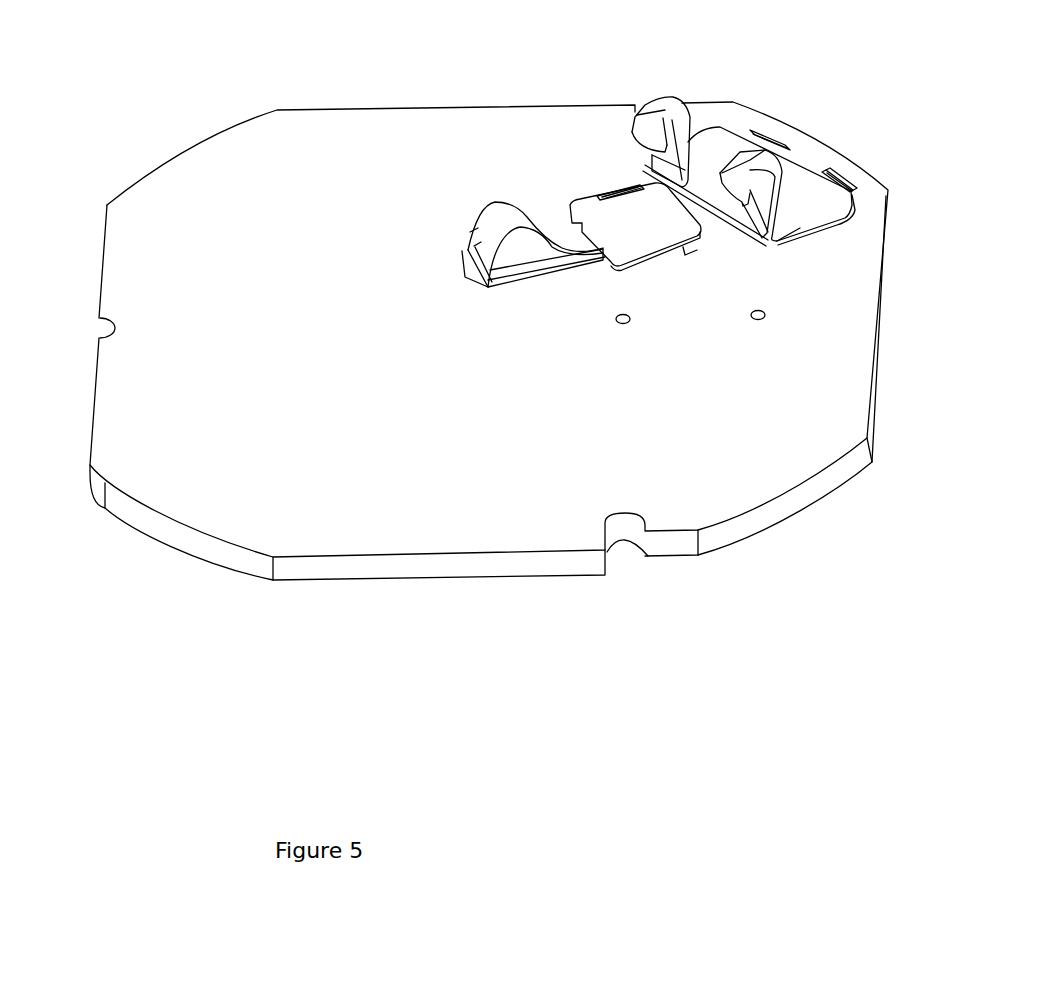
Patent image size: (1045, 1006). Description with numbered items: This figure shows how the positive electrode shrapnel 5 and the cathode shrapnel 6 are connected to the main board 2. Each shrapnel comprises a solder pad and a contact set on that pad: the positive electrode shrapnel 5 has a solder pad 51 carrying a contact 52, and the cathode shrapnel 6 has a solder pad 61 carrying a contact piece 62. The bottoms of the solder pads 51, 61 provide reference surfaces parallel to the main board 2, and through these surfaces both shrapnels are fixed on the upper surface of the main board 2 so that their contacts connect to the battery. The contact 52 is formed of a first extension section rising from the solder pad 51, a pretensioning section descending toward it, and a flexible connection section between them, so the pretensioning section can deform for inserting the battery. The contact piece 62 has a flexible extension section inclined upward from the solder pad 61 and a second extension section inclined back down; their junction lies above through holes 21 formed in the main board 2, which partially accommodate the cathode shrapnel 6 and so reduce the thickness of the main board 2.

The main board 2 is at (153, 263).
The through holes 21 is at (508, 277).
The positive electrode shrapnel 5 is at (793, 154).
The solder pad 51 is at (800, 106).
The contact 52 is at (668, 100).
The cathode shrapnel 6 is at (539, 240).
The solder pad 61 is at (618, 212).
The contact piece 62 is at (515, 217).